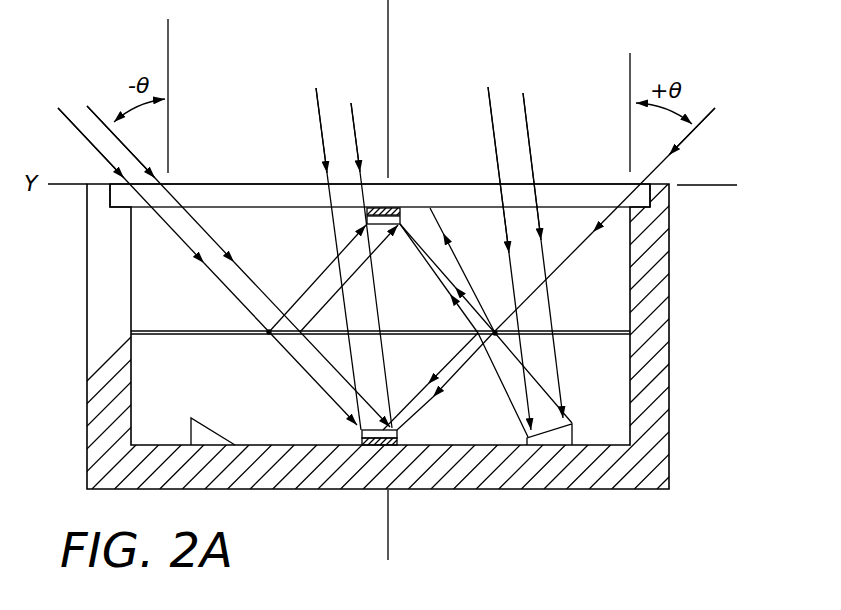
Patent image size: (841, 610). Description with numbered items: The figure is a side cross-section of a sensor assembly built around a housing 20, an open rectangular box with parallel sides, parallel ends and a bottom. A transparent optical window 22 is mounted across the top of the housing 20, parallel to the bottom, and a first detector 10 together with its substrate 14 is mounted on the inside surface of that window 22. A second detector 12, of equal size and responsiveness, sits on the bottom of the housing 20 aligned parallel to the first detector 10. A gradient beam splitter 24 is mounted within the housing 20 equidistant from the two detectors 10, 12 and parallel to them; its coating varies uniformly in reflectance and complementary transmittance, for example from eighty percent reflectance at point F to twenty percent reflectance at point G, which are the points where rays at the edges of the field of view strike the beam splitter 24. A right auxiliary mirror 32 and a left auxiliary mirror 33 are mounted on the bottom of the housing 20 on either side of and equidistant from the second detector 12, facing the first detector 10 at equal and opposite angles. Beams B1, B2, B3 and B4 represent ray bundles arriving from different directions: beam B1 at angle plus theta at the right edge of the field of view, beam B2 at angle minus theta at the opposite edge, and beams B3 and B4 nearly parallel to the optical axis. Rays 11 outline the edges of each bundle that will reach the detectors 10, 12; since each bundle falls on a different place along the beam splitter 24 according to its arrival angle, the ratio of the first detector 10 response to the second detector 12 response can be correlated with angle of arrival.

The first detector 10 is at (367, 223).
The rays 11 is at (77, 128).
The second detector 12 is at (400, 434).
The substrate 14 is at (383, 208).
The housing 20 is at (657, 462).
The transparent optical window 22 is at (246, 190).
The beam splitter 24 is at (604, 316).
The right auxiliary mirror 32 is at (563, 436).
The left auxiliary mirror 33 is at (203, 428).
The beam B1 is at (695, 107).
The beam B2 is at (78, 114).
The beam B3 is at (507, 103).
The beam B4 is at (333, 103).
The point F is at (269, 335).
The point G is at (497, 336).